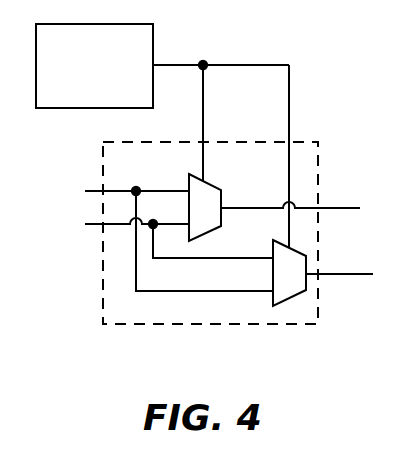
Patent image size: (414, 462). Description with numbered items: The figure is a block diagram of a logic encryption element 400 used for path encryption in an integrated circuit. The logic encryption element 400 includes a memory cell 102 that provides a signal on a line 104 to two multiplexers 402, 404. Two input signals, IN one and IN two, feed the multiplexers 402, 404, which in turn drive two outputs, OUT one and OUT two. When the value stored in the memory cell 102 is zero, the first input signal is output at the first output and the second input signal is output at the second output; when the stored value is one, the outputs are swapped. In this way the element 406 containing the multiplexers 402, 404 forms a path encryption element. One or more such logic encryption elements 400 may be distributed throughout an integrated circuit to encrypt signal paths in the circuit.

The logic encryption element 400 is at (214, 372).
The memory cell 102 is at (75, 100).
The line 104 is at (245, 65).
The multiplexer 402 is at (221, 190).
The multiplexer 404 is at (293, 306).
The path encryption element 406 is at (103, 292).